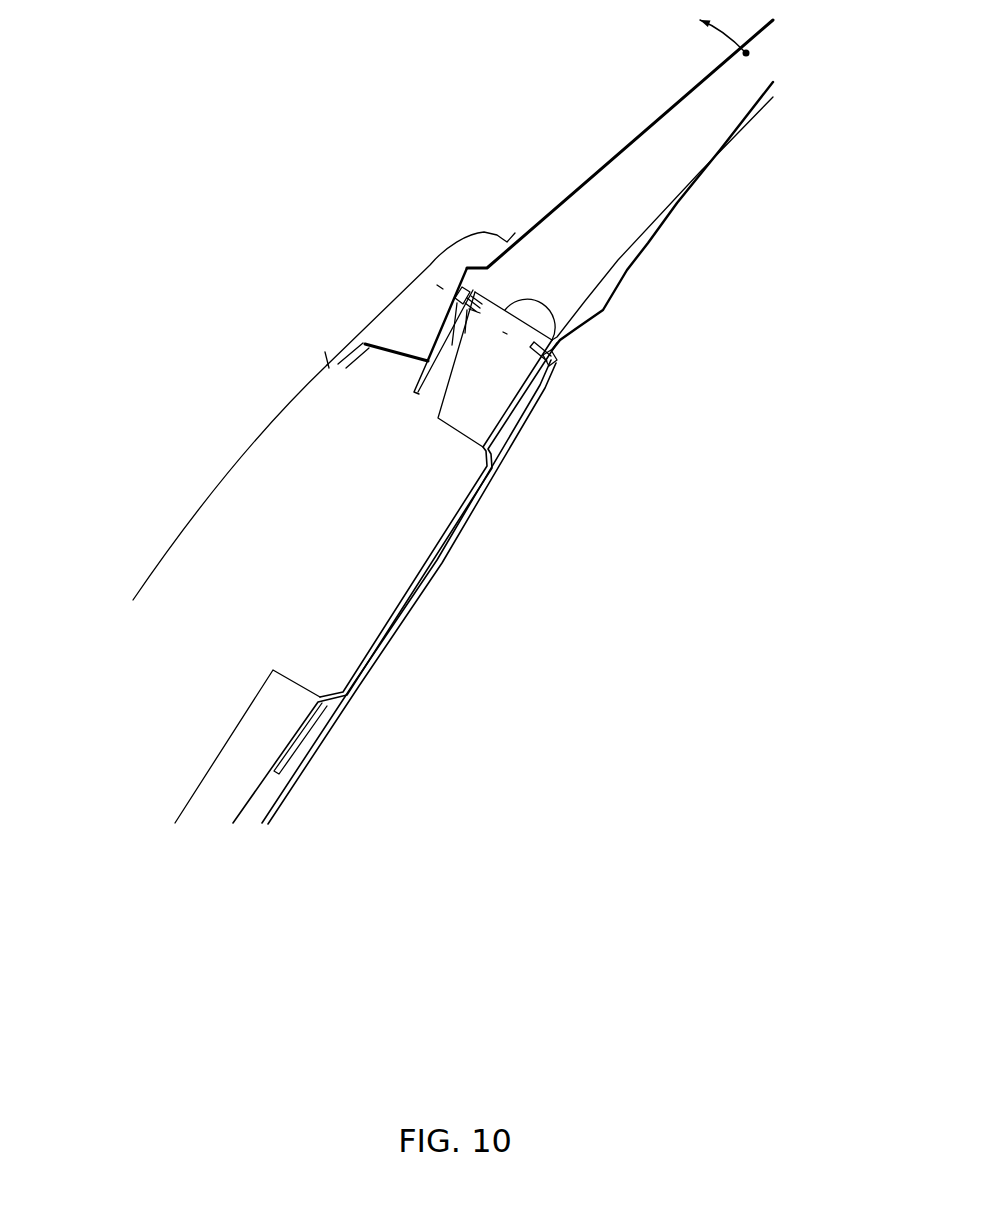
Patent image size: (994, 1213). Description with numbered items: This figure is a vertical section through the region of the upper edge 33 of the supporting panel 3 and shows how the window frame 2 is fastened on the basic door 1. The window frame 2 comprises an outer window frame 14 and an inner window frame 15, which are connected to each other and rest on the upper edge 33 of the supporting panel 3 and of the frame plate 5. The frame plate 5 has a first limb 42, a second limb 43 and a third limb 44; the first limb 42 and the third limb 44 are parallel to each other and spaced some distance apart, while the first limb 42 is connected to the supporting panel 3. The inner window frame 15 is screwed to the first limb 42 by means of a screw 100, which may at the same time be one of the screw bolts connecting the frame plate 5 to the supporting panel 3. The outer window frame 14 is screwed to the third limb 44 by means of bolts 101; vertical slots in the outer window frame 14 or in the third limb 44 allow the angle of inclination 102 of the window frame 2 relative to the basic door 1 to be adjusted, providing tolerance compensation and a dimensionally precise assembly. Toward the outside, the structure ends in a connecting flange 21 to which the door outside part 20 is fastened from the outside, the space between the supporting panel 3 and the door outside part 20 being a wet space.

The basic door 1 is at (230, 491).
The window frame 2 is at (657, 158).
The supporting panel 3 is at (477, 407).
The second frame plate 5 is at (452, 345).
The outer window frame 14 is at (580, 182).
The inner window frame 15 is at (677, 203).
The door outside part 20 is at (325, 365).
The connecting flange 21 is at (438, 560).
The upper edge 33 is at (530, 317).
The first limb 42 is at (517, 401).
The second limb 43 is at (465, 333).
The third limb 44 is at (428, 360).
The screw 100 is at (551, 359).
The bolts 101 is at (477, 310).
The angle of inclination 102 is at (749, 62).